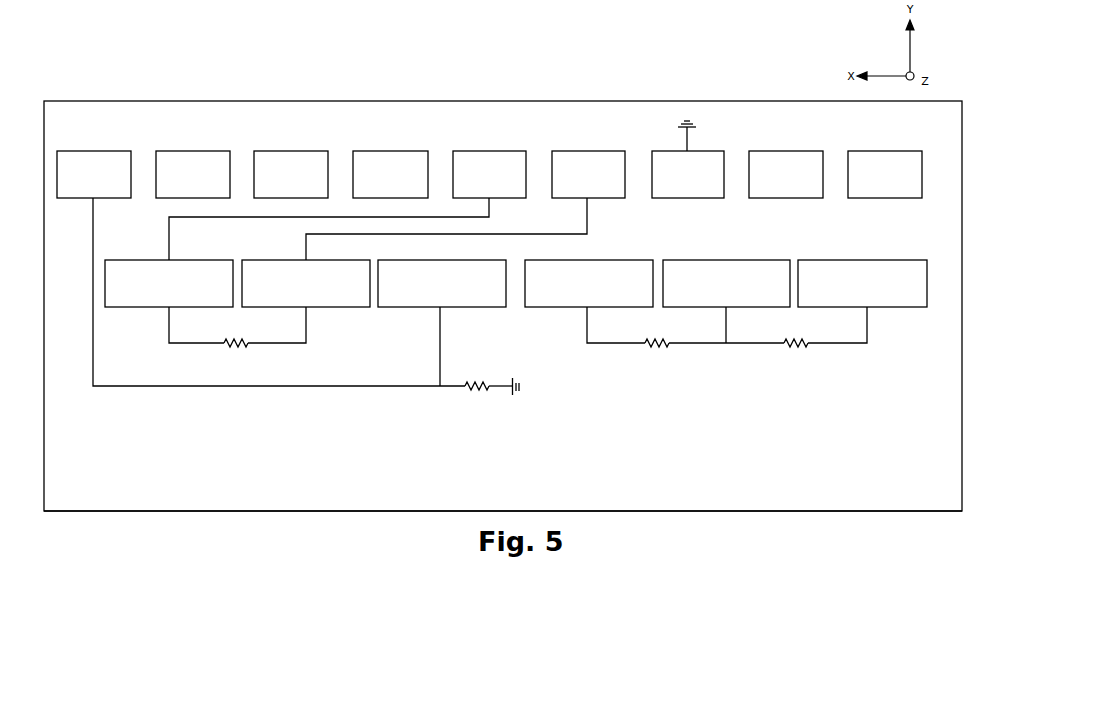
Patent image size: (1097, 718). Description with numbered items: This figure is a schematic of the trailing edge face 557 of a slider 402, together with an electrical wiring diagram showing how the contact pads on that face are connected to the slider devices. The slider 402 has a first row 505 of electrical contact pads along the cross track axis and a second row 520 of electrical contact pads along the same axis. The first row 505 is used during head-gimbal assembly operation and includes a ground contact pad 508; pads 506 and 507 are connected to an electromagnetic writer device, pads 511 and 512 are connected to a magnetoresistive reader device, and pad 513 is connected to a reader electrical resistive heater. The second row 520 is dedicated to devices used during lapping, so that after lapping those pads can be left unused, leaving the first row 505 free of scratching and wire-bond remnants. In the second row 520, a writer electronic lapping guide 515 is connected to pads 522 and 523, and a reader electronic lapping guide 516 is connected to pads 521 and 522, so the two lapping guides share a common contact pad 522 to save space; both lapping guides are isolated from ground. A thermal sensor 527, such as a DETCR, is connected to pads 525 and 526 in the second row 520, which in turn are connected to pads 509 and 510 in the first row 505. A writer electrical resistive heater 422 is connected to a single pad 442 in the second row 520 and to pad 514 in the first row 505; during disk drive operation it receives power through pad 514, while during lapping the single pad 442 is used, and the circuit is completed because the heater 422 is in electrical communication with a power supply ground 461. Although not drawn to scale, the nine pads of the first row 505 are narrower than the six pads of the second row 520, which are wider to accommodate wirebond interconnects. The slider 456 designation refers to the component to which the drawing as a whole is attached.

The slider 402 is at (347, 133).
The slider 456 is at (712, 513).
The first row of electrical contact pads 505 is at (506, 159).
The electrical contact pad 506 is at (884, 163).
The electrical contact pad 507 is at (786, 163).
The ground contact pad 508 is at (714, 162).
The electrical contact pad 509 is at (595, 163).
The electrical contact pad 510 is at (496, 163).
The electrical contact pad 511 is at (397, 163).
The electrical contact pad 512 is at (298, 163).
The electrical contact pad 513 is at (200, 163).
The electrical contact pad 514 is at (101, 163).
The writer electronic lapping guide 515 is at (657, 365).
The reader electronic lapping guide 516 is at (796, 365).
The second row of electrical contact pads 520 is at (742, 280).
The electrical contact pad 521 is at (893, 266).
The common electrical contact pad 522 is at (775, 266).
The electrical contact pad 523 is at (630, 266).
The electrical contact pad 525 is at (333, 267).
The electrical contact pad 526 is at (201, 267).
The thermal sensor 527 is at (268, 365).
The electrical contact pad 442 is at (465, 267).
The writer electrical resistive heater 422 is at (488, 409).
The power supply ground 461 is at (515, 371).
The trailing edge face 557 is at (792, 433).